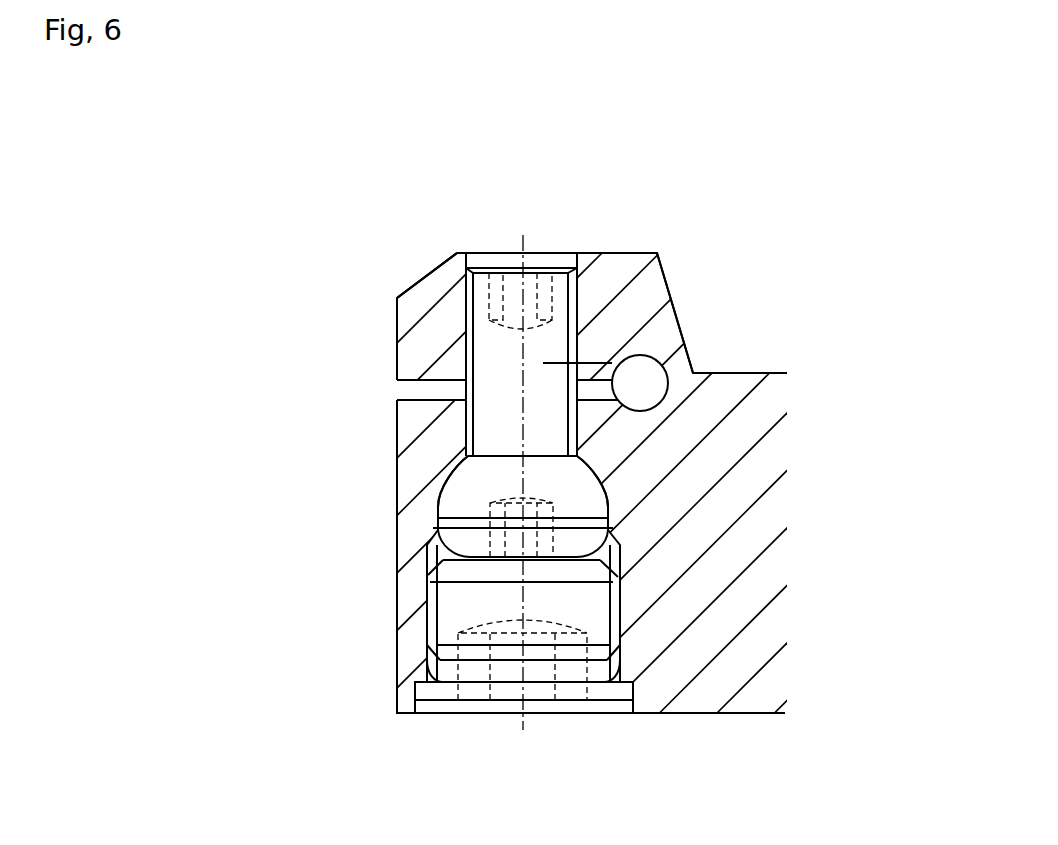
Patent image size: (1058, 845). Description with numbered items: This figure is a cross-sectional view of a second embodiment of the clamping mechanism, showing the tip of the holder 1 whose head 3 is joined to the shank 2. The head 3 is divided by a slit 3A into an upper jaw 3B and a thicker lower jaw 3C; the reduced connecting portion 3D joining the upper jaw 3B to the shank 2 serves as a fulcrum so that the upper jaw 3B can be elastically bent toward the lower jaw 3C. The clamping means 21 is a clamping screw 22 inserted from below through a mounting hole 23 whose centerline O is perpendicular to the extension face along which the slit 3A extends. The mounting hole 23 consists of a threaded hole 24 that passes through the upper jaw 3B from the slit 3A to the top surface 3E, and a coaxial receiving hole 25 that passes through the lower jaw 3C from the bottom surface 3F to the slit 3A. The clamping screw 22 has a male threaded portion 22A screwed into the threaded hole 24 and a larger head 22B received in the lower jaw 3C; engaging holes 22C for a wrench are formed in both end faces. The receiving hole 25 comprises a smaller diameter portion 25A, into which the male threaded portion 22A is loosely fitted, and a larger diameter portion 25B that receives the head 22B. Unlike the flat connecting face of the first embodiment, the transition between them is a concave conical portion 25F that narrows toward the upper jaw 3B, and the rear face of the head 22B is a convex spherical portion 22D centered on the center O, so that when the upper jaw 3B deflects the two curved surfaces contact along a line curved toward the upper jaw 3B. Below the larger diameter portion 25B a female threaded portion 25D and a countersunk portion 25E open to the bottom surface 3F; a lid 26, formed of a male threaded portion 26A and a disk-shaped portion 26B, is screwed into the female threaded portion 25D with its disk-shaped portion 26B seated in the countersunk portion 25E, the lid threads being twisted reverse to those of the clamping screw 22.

The holder 1 is at (842, 166).
The shank 2 is at (784, 362).
The head 3 is at (684, 255).
The slit 3A is at (405, 391).
The upper jaw 3B is at (417, 297).
The lower jaw 3C is at (405, 641).
The connecting portion 3D is at (680, 365).
The top surface of the head 3E is at (617, 248).
The bottom surface of the head 3F is at (651, 713).
The clamping means 21 is at (415, 342).
The clamping screw 22 is at (895, 420).
The male threaded portion 22A is at (582, 482).
The head of the clamping screw 22B is at (612, 530).
The engaging hole 22C is at (541, 268).
The convex spherical portion 22D is at (610, 517).
The mounting hole 23 is at (556, 244).
The threaded hole 24 is at (467, 348).
The receiving hole 25 is at (288, 442).
The smaller diameter portion 25A is at (468, 436).
The larger diameter portion 25B is at (438, 512).
The female threaded portion 25D is at (432, 617).
The countersunk portion 25E is at (425, 683).
The concave conical portion 25F is at (454, 480).
The lid 26 is at (895, 622).
The male threaded portion of the lid 26A is at (597, 607).
The disk-shaped portion 26B is at (625, 690).
The centerline O is at (521, 245).